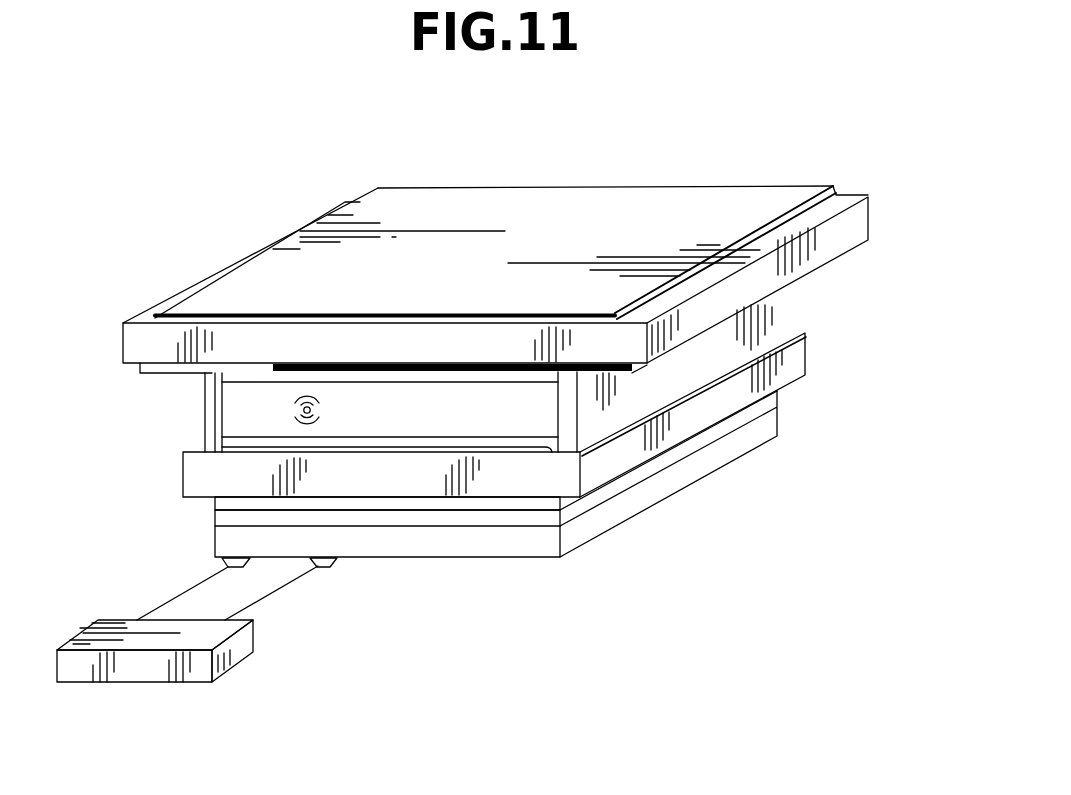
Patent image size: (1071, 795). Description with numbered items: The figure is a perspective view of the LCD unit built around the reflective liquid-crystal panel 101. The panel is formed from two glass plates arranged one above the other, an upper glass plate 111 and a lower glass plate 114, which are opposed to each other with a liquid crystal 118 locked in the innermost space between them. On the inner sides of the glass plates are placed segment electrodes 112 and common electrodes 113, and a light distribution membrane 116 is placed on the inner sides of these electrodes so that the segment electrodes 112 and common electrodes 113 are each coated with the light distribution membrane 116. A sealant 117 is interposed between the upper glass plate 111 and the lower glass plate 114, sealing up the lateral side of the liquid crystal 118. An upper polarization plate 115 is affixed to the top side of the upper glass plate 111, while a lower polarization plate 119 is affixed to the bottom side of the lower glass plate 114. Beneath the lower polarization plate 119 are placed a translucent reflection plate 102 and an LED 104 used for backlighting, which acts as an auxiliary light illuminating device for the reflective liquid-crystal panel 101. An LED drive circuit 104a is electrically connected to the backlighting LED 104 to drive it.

The reflective liquid-crystal panel 101 is at (818, 316).
The translucent reflection plate 102 is at (457, 520).
The LED 104 is at (368, 545).
The LED drive circuit 104a is at (233, 653).
The upper glass plate 111 is at (847, 232).
The segment electrodes 112 is at (617, 374).
The common electrodes 113 is at (252, 450).
The lower glass plate 114 is at (597, 473).
The upper polarization plate 115 is at (667, 210).
The light distribution membrane 116 is at (413, 440).
The sealant 117 is at (567, 418).
The liquid crystal 118 is at (306, 396).
The lower polarization plate 119 is at (528, 503).